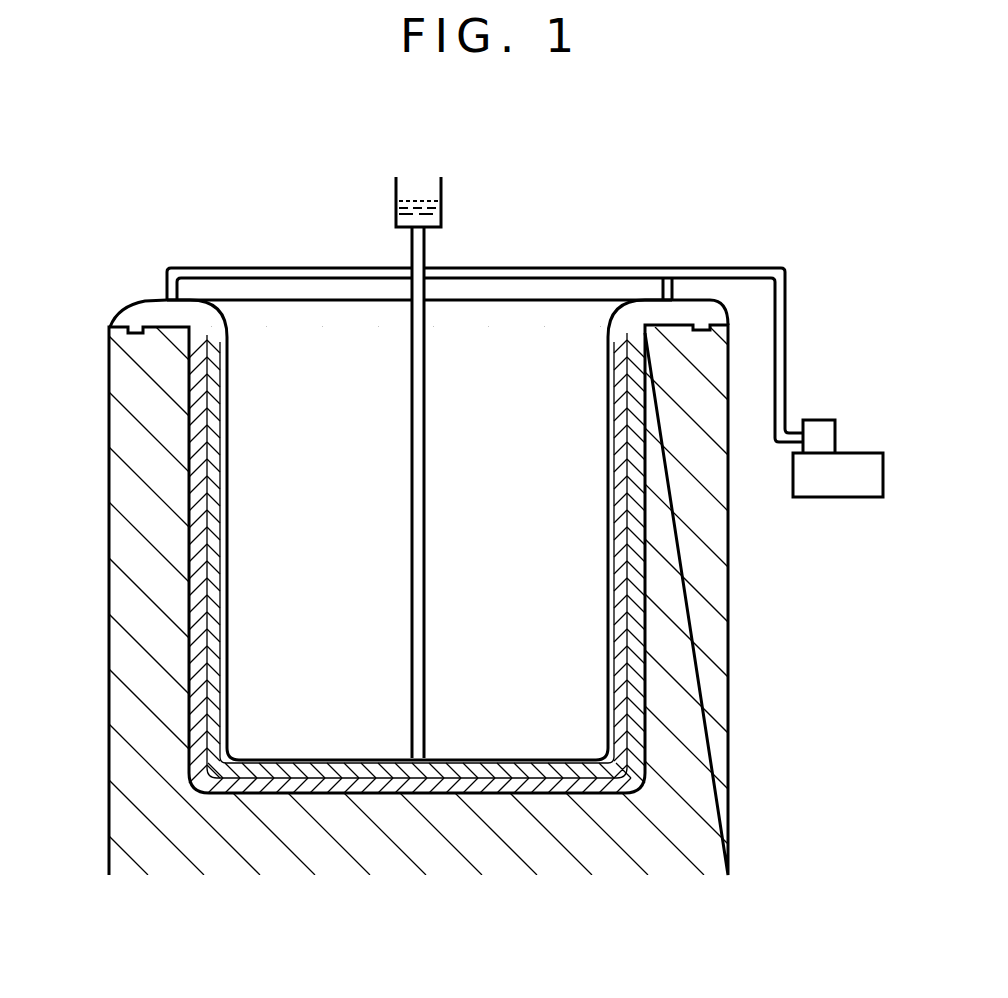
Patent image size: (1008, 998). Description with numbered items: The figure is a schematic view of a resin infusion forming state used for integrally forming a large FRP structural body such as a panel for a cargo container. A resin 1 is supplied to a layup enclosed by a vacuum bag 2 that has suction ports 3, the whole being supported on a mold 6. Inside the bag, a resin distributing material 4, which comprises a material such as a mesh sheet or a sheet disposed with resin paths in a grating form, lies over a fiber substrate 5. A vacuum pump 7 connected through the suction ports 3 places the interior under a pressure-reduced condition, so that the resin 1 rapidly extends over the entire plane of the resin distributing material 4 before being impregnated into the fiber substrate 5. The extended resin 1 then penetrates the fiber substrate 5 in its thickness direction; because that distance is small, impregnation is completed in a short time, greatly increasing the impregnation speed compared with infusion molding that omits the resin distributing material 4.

The resin 1 is at (445, 208).
The vacuum bag 2 is at (230, 407).
The suction ports 3 is at (167, 288).
The resin distributing material 4 is at (213, 493).
The fiber substrate 5 is at (197, 587).
The mold 6 is at (718, 753).
The vacuum pump 7 is at (863, 455).